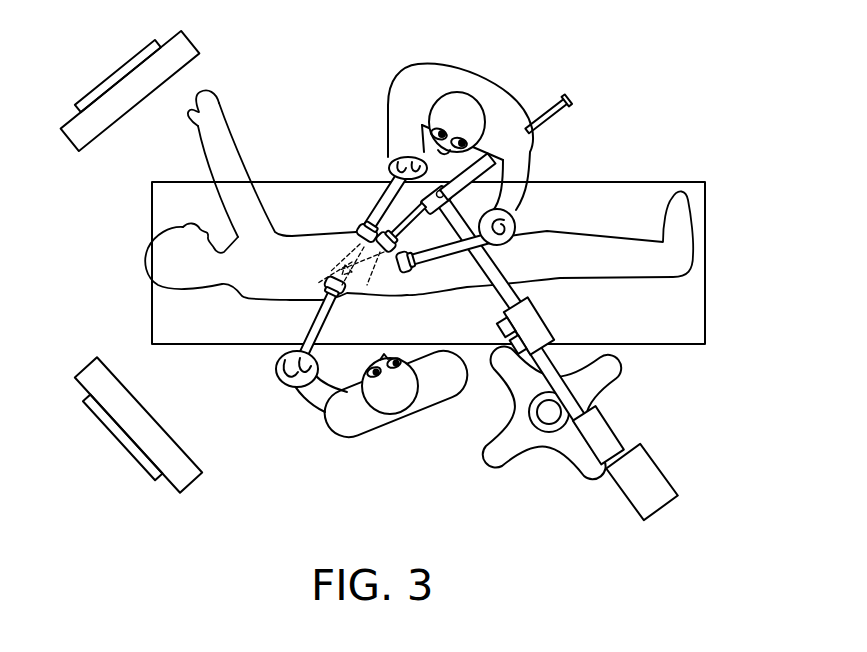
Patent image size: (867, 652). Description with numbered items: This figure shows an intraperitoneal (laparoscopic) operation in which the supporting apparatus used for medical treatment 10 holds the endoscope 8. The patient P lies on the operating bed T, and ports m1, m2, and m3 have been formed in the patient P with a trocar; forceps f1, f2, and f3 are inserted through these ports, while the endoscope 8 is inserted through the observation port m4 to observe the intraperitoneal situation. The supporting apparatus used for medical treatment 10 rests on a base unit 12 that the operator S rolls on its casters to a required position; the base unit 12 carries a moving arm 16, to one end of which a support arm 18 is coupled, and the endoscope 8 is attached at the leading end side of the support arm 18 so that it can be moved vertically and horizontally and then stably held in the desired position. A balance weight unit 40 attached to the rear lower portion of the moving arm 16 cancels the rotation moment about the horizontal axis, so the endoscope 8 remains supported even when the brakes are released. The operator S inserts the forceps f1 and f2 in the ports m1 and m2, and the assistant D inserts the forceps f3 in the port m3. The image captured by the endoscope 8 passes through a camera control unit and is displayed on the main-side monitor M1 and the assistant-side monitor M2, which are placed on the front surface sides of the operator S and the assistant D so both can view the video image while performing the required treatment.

The supporting apparatus used for medical treatment 10 is at (668, 414).
The endoscope 8 is at (463, 172).
The support arm 18 is at (510, 265).
The moving arm 16 is at (580, 392).
The base unit 12 is at (511, 452).
The balance weight unit 40 is at (655, 473).
The operator S is at (442, 72).
The assistant D is at (368, 437).
The patient P is at (145, 260).
The operating bed T is at (160, 318).
The main-side monitor M1 is at (110, 420).
The assistant-side monitor M2 is at (93, 92).
The forceps f1 is at (383, 193).
The forceps f2 is at (453, 260).
The forceps f3 is at (303, 328).
The port m1 is at (358, 231).
The port m2 is at (407, 272).
The port m3 is at (358, 286).
The observation port m4 is at (362, 225).